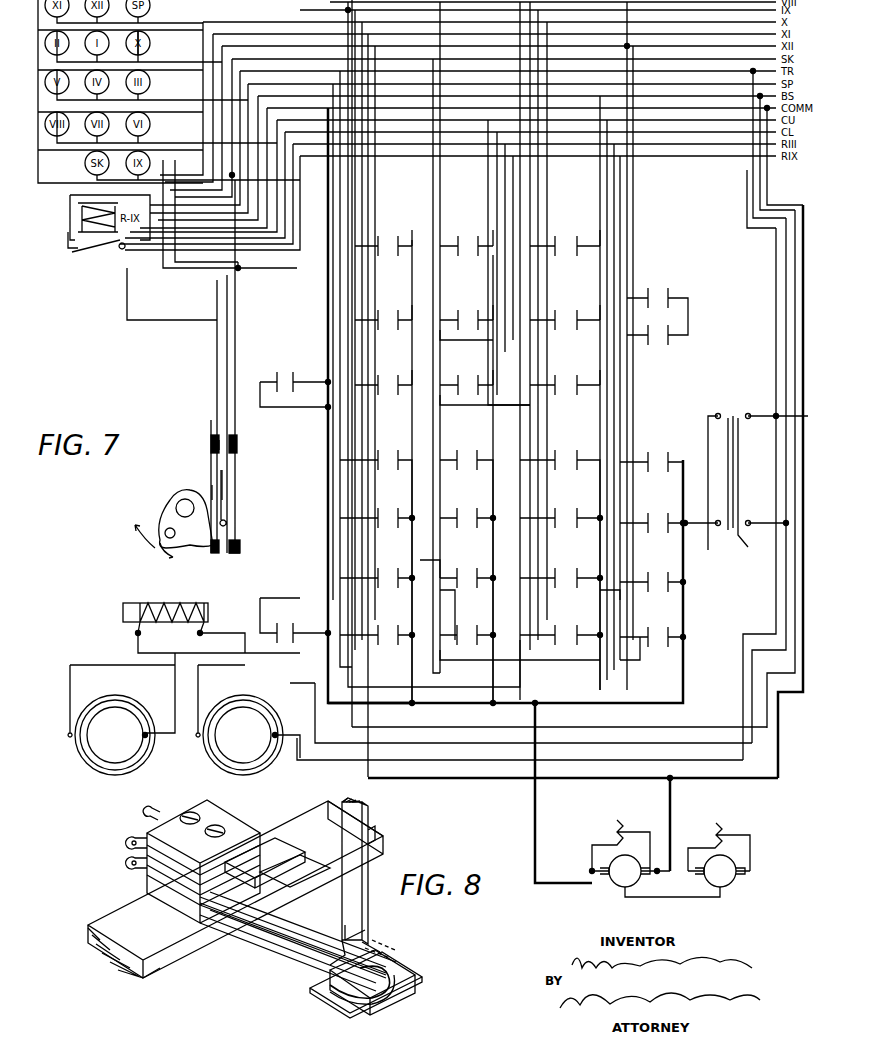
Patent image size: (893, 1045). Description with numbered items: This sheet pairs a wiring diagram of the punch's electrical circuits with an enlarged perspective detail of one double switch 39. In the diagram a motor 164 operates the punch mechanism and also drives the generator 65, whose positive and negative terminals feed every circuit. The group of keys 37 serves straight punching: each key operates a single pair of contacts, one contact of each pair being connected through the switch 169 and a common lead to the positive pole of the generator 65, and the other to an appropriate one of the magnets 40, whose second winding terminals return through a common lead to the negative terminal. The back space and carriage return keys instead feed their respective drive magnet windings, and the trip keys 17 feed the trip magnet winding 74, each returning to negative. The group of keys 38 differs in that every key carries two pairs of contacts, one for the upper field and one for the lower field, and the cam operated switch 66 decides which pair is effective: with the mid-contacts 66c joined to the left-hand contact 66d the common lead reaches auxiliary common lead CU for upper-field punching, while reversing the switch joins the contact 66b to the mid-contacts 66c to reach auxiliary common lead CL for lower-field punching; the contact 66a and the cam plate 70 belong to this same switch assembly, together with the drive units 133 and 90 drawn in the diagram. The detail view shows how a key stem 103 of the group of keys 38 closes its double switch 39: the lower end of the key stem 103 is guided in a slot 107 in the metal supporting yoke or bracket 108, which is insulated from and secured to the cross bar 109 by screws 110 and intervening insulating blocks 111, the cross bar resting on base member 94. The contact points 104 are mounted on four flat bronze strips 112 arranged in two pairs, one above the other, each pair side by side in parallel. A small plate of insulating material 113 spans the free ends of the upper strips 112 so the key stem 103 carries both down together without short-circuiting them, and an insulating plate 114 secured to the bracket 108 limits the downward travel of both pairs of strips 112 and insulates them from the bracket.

In FIG. 7, the magnets 40 is at (115, 128).
In FIG. 7, the trip keys 17 is at (274, 612).
In FIG. 7, the group of keys 38 is at (742, 307).
In FIG. 7, the group of keys 37 is at (742, 610).
In FIG. 7, the cam operated switch 66 is at (257, 511).
In FIG. 7, the switch contact 66a is at (236, 546).
In FIG. 7, the contact 66b is at (213, 462).
In FIG. 7, the mid-contacts 66c is at (222, 482).
In FIG. 7, the left-hand contact 66d is at (210, 490).
In FIG. 7, the cam plate 70 is at (166, 526).
In FIG. 7, the trip magnet winding 74 is at (200, 608).
In FIG. 7, the bedstead drive motor 133 is at (87, 760).
In FIG. 7, the carriage return drive motor 90 is at (213, 758).
In FIG. 7, the switch 169 is at (733, 484).
In FIG. 7, the generator 65 is at (617, 884).
In FIG. 7, the motor 164 is at (730, 878).
In FIG. 8, the double switch 39 is at (425, 823).
In FIG. 8, the cross bar 109 is at (235, 889).
In FIG. 8, the base bar 94 is at (155, 960).
In FIG. 8, the screws 110 is at (204, 834).
In FIG. 8, the insulating blocks 111 is at (147, 883).
In FIG. 8, the supporting yoke or bracket 108 is at (400, 1003).
In FIG. 8, the flat bronze strips 112 is at (290, 880).
In FIG. 8, the plate of insulating material 113 is at (320, 958).
In FIG. 8, the contact points 104 is at (330, 975).
In FIG. 8, the insulating plate 114 is at (325, 996).
In FIG. 8, the slot 107 is at (345, 935).
In FIG. 8, the key stem 103 is at (360, 870).